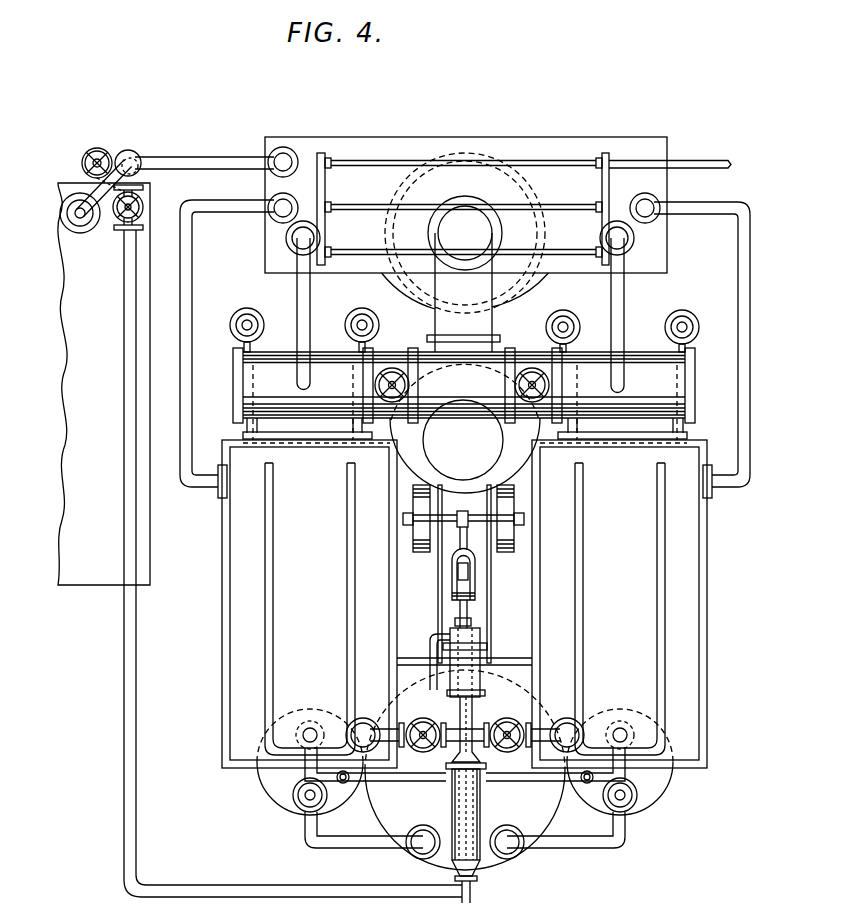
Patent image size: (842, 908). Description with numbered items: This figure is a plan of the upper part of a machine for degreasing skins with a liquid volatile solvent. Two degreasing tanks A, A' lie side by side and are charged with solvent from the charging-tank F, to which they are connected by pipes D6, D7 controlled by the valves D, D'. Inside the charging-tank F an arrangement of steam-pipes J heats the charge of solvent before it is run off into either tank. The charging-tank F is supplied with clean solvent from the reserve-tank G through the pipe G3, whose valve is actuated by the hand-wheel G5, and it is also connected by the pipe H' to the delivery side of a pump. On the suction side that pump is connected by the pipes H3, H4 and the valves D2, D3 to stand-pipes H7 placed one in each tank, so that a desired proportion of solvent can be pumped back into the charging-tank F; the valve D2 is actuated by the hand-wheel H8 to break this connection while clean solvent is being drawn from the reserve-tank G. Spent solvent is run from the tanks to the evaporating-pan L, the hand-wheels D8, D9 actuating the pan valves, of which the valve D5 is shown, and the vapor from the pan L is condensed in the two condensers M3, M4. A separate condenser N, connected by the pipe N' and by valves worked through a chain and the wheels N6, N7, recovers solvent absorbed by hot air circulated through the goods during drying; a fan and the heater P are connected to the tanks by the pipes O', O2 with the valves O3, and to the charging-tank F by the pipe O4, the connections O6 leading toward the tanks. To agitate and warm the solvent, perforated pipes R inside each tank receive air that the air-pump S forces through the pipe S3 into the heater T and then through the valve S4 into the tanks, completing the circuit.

The charging-tank F is at (466, 205).
The steam-pipes J is at (325, 188).
The heater P is at (478, 170).
The pipe O' is at (470, 292).
The pipe H' is at (216, 157).
The valve D is at (271, 215).
The pipe D6 is at (183, 447).
The valve D' is at (659, 215).
The pipe D7 is at (750, 362).
The pipe O4 is at (310, 308).
The wheel N6 is at (238, 318).
The pipe N' is at (462, 322).
The wheel N7 is at (688, 298).
The manifold connections O6 is at (464, 395).
The valves O3 is at (380, 355).
The pipe O2 is at (465, 392).
The condenser N is at (465, 446).
The tank A is at (309, 604).
The tank A' is at (619, 604).
The perforated pipes R is at (273, 542).
The air-pump S is at (480, 650).
The pipe S3 is at (468, 728).
The stand-pipes H7 is at (358, 718).
The valve D2 is at (422, 746).
The valve D3 is at (511, 747).
The pipe H4 is at (466, 740).
The heater T is at (472, 822).
The evaporating-pan L is at (484, 885).
The valve D5 is at (618, 728).
The valve S4 is at (343, 783).
The condenser M3 is at (310, 762).
The condenser M4 is at (631, 762).
The hand-wheel D8 is at (298, 801).
The hand-wheel D9 is at (627, 807).
The pipe H3 is at (130, 562).
The hand-wheel H8 is at (143, 200).
The hand-wheel G5 is at (91, 150).
The pipe G3 is at (80, 225).
The reserve-tank G is at (104, 384).